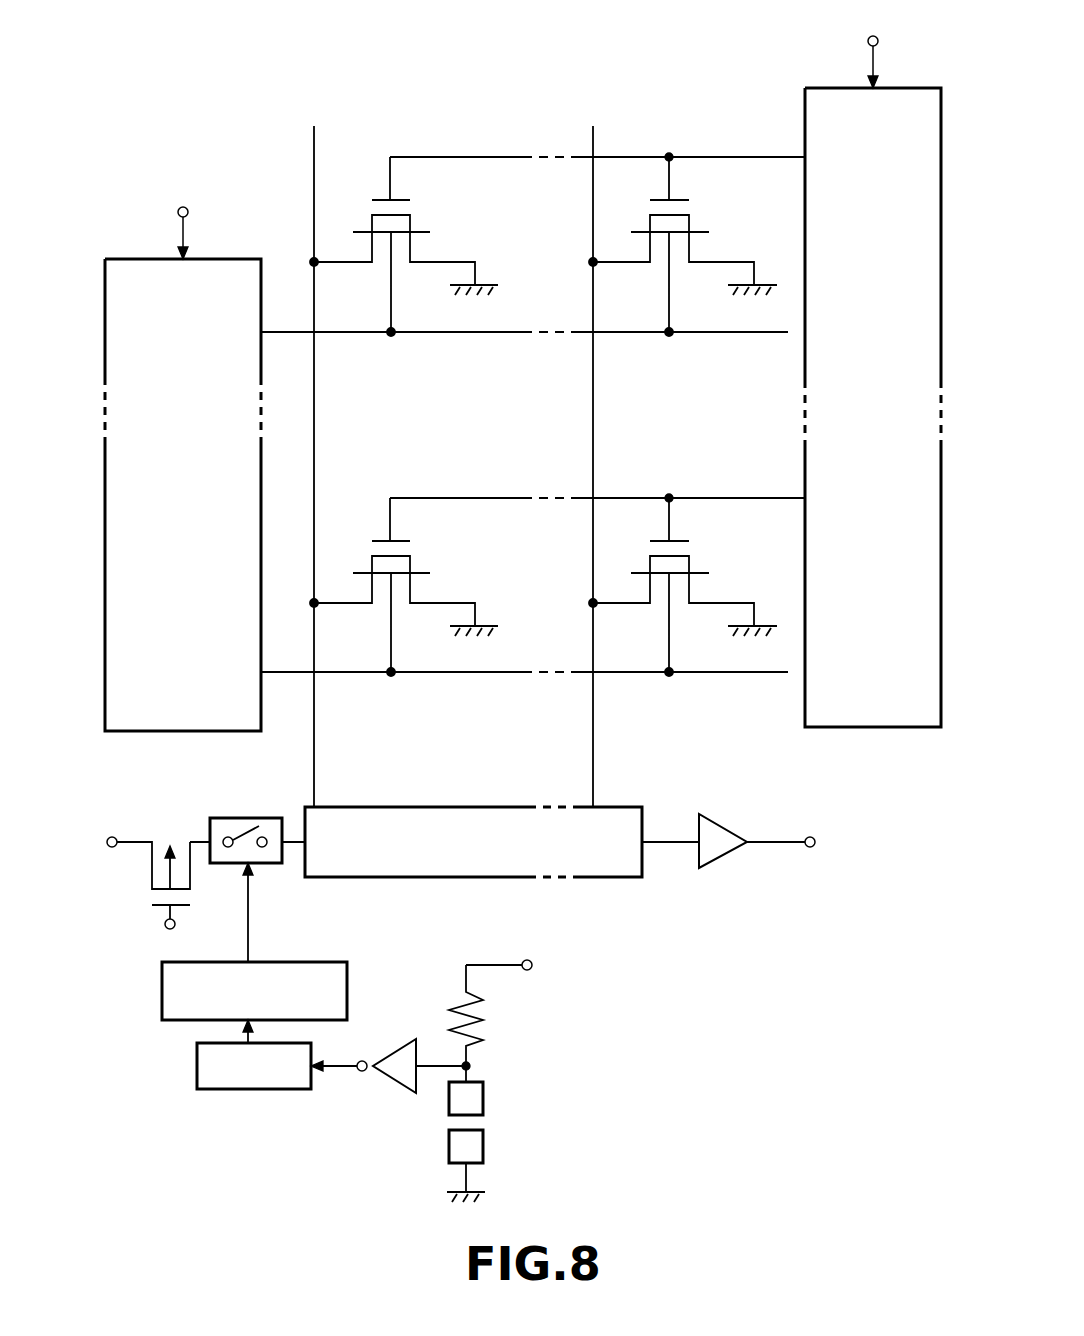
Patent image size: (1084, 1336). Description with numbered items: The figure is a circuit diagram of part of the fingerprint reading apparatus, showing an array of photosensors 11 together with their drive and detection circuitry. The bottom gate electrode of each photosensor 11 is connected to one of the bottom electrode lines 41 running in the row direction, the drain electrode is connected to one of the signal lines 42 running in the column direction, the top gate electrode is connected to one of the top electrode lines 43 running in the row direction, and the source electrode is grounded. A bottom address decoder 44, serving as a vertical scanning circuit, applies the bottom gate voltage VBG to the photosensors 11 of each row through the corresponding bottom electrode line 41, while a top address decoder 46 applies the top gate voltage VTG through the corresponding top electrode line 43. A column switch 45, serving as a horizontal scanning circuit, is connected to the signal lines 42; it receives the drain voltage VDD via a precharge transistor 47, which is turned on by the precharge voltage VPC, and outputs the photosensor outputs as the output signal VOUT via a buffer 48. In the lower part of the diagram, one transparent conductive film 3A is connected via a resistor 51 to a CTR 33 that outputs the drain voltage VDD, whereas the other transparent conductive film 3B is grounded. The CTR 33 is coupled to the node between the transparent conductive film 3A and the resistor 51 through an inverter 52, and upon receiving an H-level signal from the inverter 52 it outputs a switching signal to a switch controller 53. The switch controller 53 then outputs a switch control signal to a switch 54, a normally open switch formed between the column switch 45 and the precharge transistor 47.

The photosensor 11 is at (441, 206).
The bottom electrode line 41 is at (286, 327).
The signal line 42 is at (316, 750).
The top electrode line 43 is at (779, 155).
The bottom address decoder 44 is at (130, 257).
The column switch 45 is at (617, 878).
The top address decoder 46 is at (918, 87).
The precharge transistor 47 is at (157, 899).
The buffer 48 is at (724, 856).
The resistor 51 is at (478, 1018).
The inverter 52 is at (394, 1046).
The switch controller 53 is at (326, 962).
The switch 54 is at (247, 812).
The CTR 33 is at (285, 1091).
The transparent conductive film 3A is at (484, 1097).
The transparent conductive film 3B is at (484, 1147).